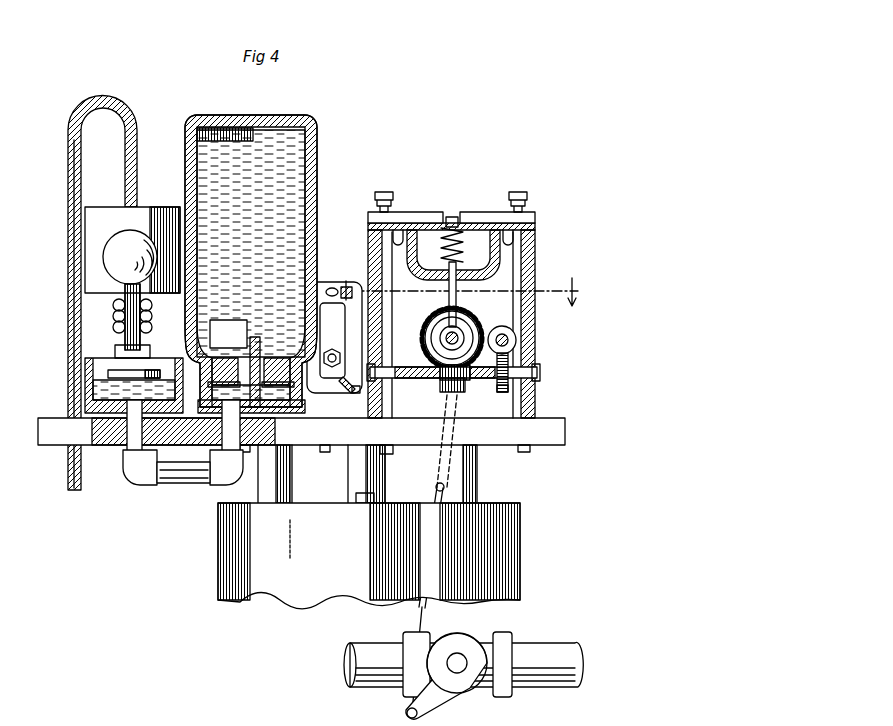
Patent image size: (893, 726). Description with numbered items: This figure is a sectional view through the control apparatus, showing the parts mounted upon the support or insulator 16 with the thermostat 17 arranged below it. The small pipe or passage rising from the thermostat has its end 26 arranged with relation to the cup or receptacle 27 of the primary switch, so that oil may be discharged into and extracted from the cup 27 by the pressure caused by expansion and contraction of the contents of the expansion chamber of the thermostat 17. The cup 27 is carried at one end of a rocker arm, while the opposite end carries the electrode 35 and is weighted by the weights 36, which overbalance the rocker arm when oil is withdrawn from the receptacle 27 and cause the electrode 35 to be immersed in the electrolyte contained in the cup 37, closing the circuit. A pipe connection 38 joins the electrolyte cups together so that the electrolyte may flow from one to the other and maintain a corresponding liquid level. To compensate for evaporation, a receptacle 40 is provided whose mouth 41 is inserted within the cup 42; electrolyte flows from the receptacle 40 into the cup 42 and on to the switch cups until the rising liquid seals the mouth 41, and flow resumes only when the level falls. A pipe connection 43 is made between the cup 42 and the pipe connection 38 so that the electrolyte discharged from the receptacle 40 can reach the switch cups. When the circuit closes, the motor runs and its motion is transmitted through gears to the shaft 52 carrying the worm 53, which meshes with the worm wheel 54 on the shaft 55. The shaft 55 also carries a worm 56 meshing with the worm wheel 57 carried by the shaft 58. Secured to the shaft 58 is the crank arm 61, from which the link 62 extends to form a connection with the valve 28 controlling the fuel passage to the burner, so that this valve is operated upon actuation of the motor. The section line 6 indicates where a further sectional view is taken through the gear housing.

The section line 6- 6 is at (447, 292).
The support or insulator 16 is at (301, 431).
The thermostat 17 is at (369, 527).
The end of pipe or passage 26 is at (137, 200).
The cup or receptacle 27 is at (132, 250).
The valve 28 is at (463, 675).
The electrode 35 is at (150, 370).
The weights 36 is at (130, 257).
The cup 37 is at (80, 380).
The pipe connection 38 is at (133, 487).
The receptacle 40 is at (318, 178).
The mouth 41 is at (325, 397).
The cup or receptacle 42 is at (207, 376).
The pipe connection 43 is at (190, 487).
The shaft 52 is at (518, 337).
The worm 53 is at (508, 357).
The worm wheel 54 is at (503, 392).
The shaft 55 is at (478, 384).
The worm 56 is at (438, 386).
The worm wheel 57 is at (438, 322).
The shaft 58 is at (456, 335).
The crank arm 61 is at (425, 346).
The link 62 is at (437, 490).